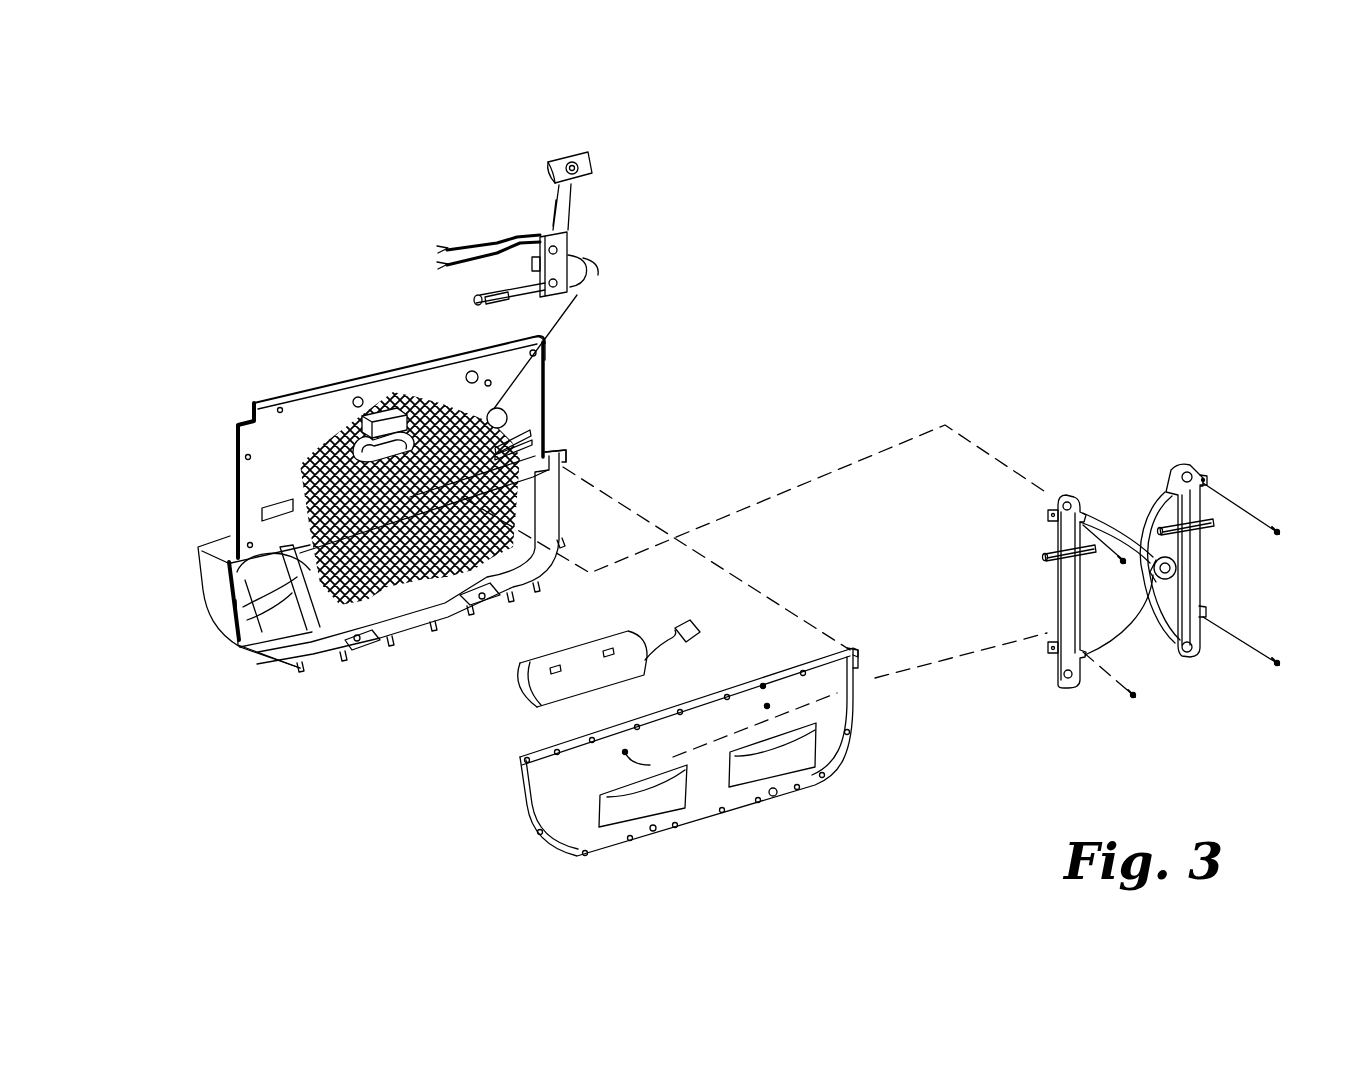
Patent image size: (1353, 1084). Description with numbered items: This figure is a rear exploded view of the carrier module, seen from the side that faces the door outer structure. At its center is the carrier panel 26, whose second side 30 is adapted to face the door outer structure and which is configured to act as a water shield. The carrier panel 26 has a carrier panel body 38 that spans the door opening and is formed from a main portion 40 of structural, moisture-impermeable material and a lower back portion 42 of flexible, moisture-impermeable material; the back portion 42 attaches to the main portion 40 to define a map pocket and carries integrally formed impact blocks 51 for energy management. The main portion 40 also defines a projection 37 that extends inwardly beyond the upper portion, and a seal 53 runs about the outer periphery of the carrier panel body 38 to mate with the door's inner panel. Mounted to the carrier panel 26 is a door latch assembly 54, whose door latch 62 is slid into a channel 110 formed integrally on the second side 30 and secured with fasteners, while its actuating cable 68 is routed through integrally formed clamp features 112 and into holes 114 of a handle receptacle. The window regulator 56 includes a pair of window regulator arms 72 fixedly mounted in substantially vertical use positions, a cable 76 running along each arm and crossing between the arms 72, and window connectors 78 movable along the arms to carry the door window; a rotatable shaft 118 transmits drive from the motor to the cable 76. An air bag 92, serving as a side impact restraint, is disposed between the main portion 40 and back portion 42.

The carrier panel 26 is at (237, 518).
The second side 30 is at (547, 387).
The projection 37 is at (203, 592).
The carrier panel body 38 is at (523, 812).
The main portion 40 is at (545, 448).
The lower back portion 42 is at (855, 667).
The impact blocks 51 is at (640, 817).
The seal 53 is at (546, 340).
The door latch assembly 54 is at (612, 156).
The window regulator 56 is at (1252, 493).
The door latch 62 is at (585, 292).
The actuating cable 68 is at (514, 237).
The window regulator arms 72 is at (1057, 600).
The cable 76 is at (1150, 505).
The window connectors 78 is at (1043, 557).
The air bag 92 is at (605, 633).
The channel 110 is at (560, 452).
The clamp features 112 is at (455, 395).
The holes 114 is at (410, 388).
The rotatable shaft 118 is at (410, 500).